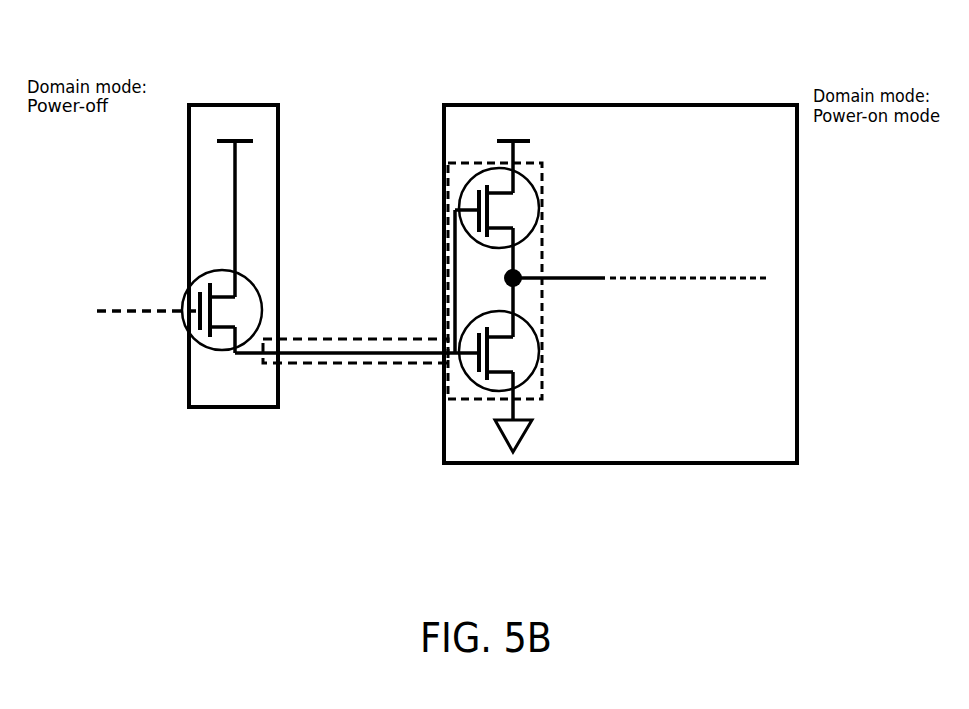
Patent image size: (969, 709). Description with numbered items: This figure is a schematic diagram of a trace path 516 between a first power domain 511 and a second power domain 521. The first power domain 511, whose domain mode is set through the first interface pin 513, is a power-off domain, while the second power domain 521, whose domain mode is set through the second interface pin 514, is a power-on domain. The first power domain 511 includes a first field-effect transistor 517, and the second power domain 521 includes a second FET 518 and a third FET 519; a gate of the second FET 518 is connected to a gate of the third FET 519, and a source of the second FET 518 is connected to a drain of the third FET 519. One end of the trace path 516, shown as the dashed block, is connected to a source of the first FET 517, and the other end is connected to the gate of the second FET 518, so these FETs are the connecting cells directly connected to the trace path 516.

The first power domain 511 is at (243, 417).
The first interface pin 513 is at (239, 128).
The second interface pin 514 is at (522, 125).
The trace path 516 is at (349, 330).
The first field-effect transistor 517 is at (183, 325).
The second FET 518 is at (543, 373).
The third FET 519 is at (538, 207).
The second power domain 521 is at (775, 463).